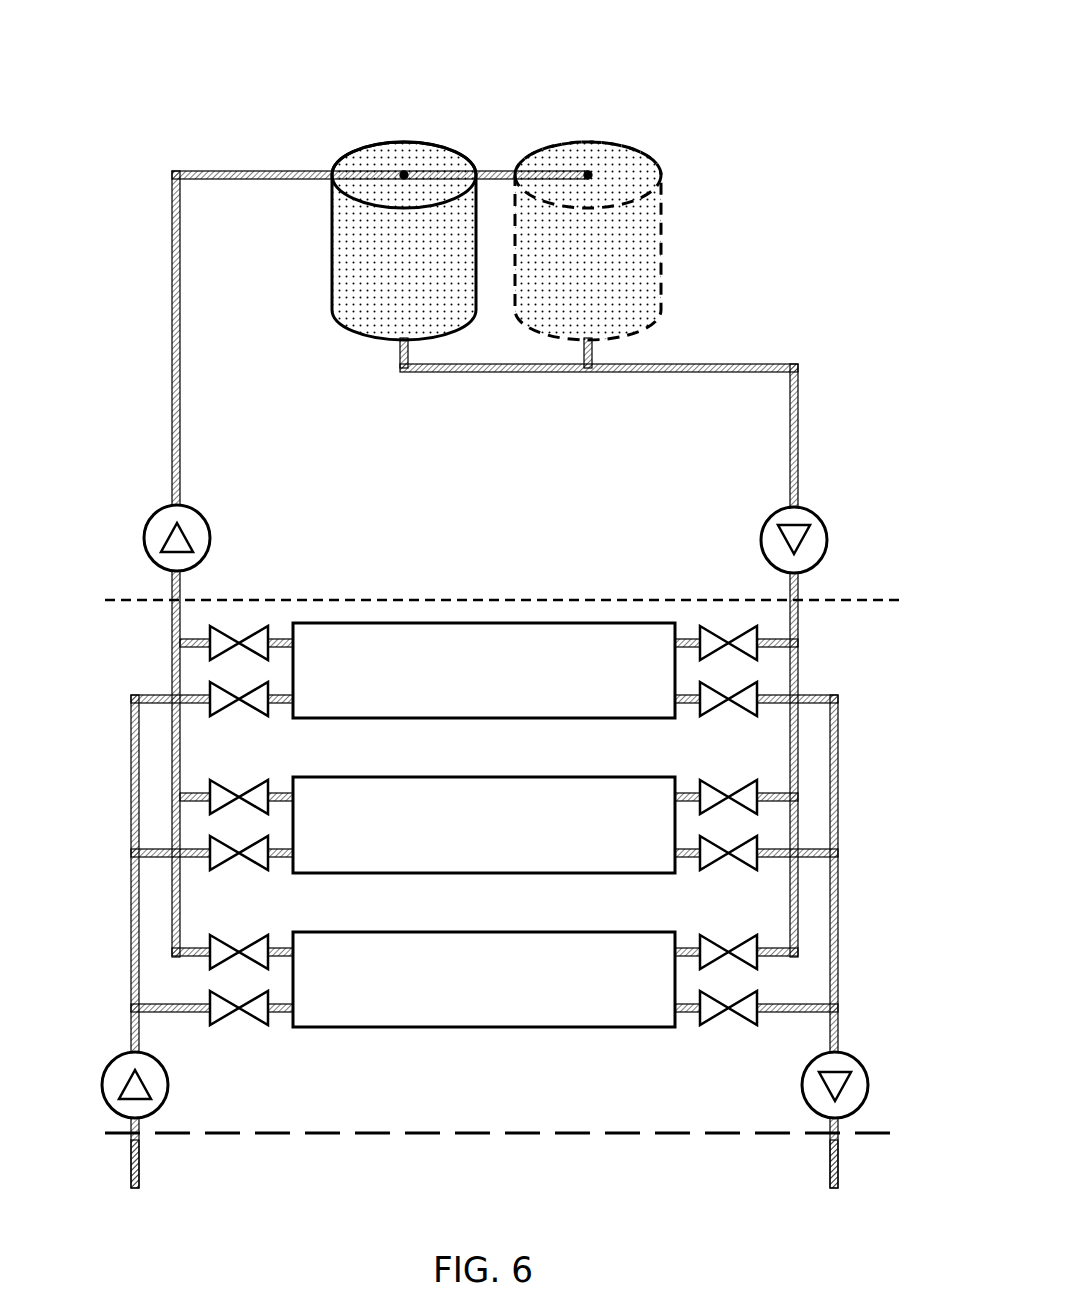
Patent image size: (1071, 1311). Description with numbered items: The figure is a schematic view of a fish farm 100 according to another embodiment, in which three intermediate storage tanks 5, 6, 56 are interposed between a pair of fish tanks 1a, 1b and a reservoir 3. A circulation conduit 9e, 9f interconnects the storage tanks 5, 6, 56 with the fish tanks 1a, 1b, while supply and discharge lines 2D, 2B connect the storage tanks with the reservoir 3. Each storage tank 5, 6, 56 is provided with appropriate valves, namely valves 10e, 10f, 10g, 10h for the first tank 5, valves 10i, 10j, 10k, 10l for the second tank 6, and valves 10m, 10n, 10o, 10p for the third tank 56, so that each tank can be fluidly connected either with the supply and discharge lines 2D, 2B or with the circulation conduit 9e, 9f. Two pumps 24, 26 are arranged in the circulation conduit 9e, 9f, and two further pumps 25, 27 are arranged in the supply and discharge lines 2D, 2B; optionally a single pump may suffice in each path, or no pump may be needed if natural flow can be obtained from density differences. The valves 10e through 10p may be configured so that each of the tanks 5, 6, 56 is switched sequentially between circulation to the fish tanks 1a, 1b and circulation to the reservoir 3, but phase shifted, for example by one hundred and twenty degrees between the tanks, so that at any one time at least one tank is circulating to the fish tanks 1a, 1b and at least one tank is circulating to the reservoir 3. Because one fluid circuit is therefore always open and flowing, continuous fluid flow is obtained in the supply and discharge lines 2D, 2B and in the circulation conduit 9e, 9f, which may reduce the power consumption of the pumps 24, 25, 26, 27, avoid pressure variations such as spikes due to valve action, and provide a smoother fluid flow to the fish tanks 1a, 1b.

The energy storage system 100 is at (658, 57).
The fish tank 1a is at (366, 148).
The fish tank 1b is at (568, 147).
The circulation conduit 9e is at (170, 423).
The circulation conduit 9f is at (798, 452).
The pump 24 is at (152, 522).
The pump 25 is at (104, 1068).
The pump 26 is at (827, 540).
The pump 27 is at (869, 1083).
The intermediate storage tank 5 is at (484, 670).
The intermediate storage tank 6 is at (484, 825).
The intermediate storage tank 56 is at (484, 979).
The valve 10e is at (256, 634).
The valve 10f is at (707, 634).
The valve 10g is at (253, 712).
The valve 10h is at (712, 712).
The valve 10i is at (228, 786).
The valve 10j is at (745, 786).
The valve 10k is at (226, 864).
The valve 10l is at (708, 866).
The valve 10m is at (258, 942).
The valve 10n is at (743, 942).
The valve 10o is at (260, 1022).
The valve 10p is at (712, 1022).
The reservoir 3 is at (502, 1164).
The supply and discharge line 2D is at (128, 1152).
The supply and discharge line 2B is at (840, 1147).